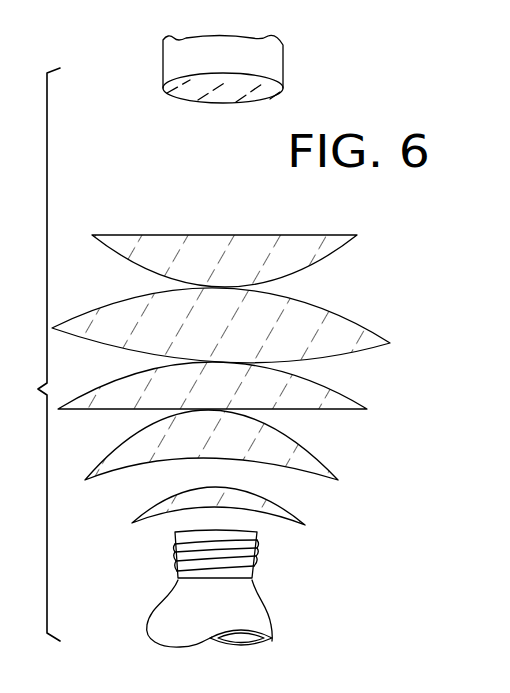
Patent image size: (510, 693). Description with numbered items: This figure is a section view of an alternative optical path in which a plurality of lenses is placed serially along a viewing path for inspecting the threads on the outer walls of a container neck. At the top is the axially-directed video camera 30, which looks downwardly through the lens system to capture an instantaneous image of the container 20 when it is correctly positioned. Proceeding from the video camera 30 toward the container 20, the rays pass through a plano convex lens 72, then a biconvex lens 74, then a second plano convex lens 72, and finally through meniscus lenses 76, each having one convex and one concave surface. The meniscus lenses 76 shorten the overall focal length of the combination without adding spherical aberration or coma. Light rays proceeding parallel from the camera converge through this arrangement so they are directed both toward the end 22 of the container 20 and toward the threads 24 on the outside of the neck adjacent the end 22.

The container 20 is at (216, 586).
The end 22 is at (211, 551).
The threads 24 is at (177, 560).
The video camera 30 is at (284, 73).
The plano convex lens 72 is at (332, 236).
The biconvex lens 74 is at (328, 324).
The meniscus lens 76 is at (317, 452).